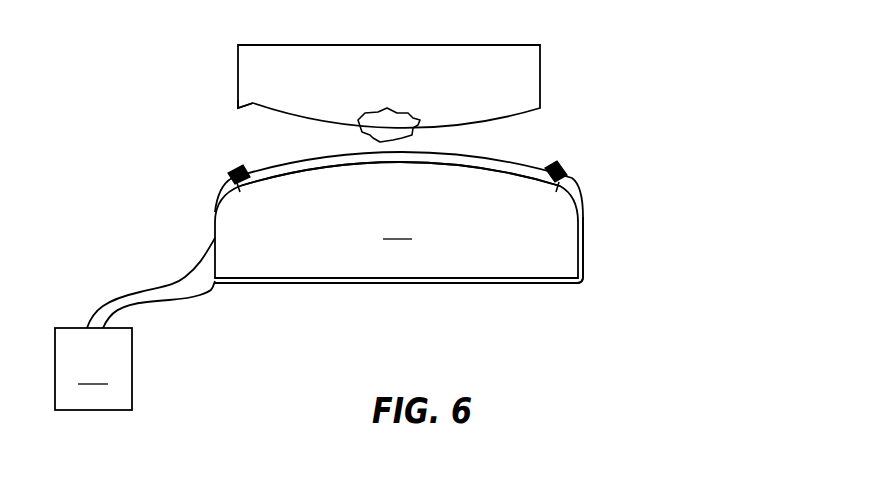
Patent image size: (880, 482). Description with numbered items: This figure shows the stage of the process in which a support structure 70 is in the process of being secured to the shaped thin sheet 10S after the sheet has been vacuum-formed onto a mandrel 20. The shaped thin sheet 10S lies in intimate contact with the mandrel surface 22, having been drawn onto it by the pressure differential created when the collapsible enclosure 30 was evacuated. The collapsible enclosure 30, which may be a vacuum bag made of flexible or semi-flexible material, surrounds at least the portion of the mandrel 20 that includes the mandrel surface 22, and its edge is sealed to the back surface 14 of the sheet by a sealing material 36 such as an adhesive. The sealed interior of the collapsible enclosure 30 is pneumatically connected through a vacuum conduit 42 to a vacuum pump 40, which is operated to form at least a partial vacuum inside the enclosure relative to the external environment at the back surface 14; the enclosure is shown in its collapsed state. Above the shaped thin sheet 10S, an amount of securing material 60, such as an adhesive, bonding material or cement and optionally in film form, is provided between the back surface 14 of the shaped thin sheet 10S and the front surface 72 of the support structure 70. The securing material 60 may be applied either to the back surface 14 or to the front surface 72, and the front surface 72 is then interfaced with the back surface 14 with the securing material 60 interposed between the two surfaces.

The support structure 70 is at (498, 58).
The front surface 72 is at (254, 105).
The securing material 60 is at (358, 122).
The mandrel 20 is at (396, 220).
The mandrel surface 22 is at (452, 163).
The back surface 14 is at (515, 160).
The collapsible enclosure 30 is at (583, 205).
The shaped thin sheet 10S is at (266, 176).
The sealing material 36 is at (564, 174).
The vacuum conduit 42 is at (143, 292).
The vacuum pump 40 is at (93, 369).